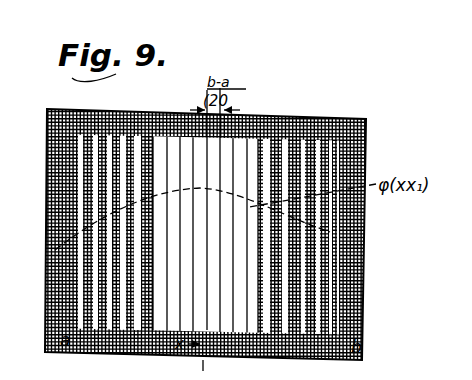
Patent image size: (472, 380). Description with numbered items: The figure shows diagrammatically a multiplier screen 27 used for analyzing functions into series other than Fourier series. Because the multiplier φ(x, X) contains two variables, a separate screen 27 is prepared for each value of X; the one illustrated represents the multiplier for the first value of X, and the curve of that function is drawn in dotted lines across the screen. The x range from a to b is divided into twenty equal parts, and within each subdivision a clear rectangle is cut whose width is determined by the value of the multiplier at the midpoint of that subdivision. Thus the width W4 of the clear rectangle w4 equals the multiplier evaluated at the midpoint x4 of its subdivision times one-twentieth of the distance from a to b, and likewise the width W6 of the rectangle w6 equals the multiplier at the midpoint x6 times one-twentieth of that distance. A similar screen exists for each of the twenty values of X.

The multiplier screen 27 is at (295, 121).
The clear rectangle w4 is at (126, 137).
The clear rectangle w6 is at (156, 137).
The width of rectangle w4 W4 is at (137, 155).
The width of rectangle w6 W6 is at (150, 177).
The midpoint of fourth subdivision x4 is at (148, 270).
The midpoint of sixth subdivision x6 is at (173, 298).